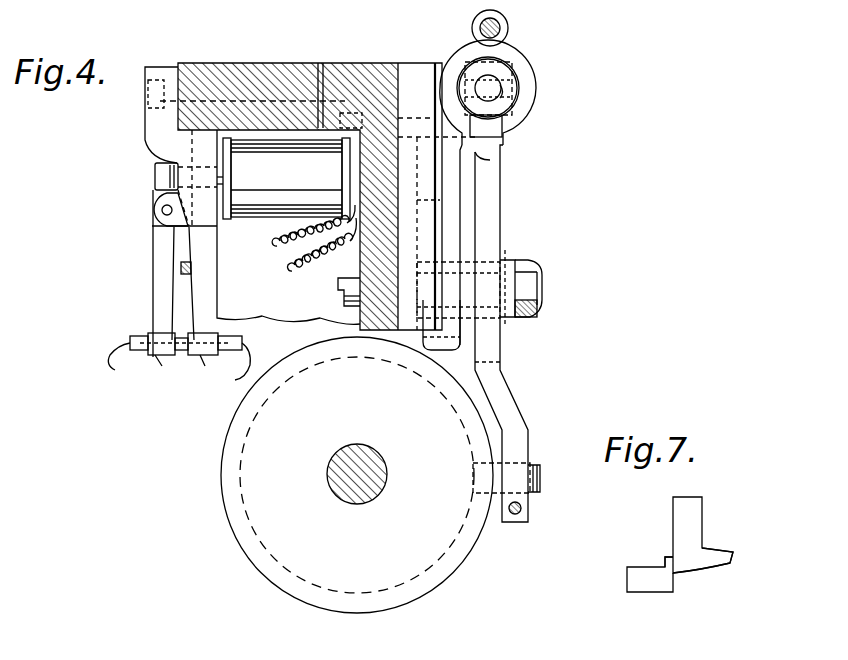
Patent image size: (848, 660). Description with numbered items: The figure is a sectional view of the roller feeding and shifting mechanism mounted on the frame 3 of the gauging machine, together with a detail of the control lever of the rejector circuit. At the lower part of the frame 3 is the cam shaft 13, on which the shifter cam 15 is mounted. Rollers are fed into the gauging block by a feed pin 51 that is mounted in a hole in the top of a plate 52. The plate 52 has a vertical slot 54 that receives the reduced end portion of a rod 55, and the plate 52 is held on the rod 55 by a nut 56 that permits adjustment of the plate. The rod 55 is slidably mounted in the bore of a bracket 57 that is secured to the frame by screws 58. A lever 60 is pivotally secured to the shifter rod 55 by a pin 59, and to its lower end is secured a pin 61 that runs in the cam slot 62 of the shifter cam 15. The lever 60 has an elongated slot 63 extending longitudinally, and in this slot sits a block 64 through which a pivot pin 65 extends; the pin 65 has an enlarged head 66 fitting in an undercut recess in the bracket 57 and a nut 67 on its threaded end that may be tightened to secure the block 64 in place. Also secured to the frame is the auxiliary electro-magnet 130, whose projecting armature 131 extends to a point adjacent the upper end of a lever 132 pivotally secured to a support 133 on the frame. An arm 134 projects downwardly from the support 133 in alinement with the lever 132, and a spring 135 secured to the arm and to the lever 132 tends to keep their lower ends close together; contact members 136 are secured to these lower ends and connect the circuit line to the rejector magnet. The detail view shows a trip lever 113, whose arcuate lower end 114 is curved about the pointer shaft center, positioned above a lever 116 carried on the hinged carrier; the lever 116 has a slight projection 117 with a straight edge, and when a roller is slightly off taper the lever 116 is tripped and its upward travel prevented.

In FIG. 4, the frame 3 is at (272, 62).
In FIG. 4, the cam shaft 13 is at (380, 485).
In FIG. 4, the shifter cam 15 is at (357, 475).
In FIG. 4, the feed pin 51 is at (501, 27).
In FIG. 4, the plate 52 is at (466, 62).
In FIG. 4, the vertical slot 54 is at (505, 122).
In FIG. 4, the rod 55 is at (493, 80).
In FIG. 4, the nut 56 is at (517, 102).
In FIG. 4, the bracket 57 is at (417, 200).
In FIG. 4, the screws 58 is at (318, 63).
In FIG. 4, the pin 59 is at (508, 92).
In FIG. 4, the lever 60 is at (488, 229).
In FIG. 4, the pin 61 is at (498, 500).
In FIG. 4, the cam slot 62 is at (440, 580).
In FIG. 4, the elongated slot 63 is at (490, 160).
In FIG. 4, the block 64 is at (445, 350).
In FIG. 4, the pivot pin 65 is at (544, 300).
In FIG. 4, the enlarged head 66 is at (505, 262).
In FIG. 4, the nut 67 is at (540, 313).
In FIG. 4, the electro-magnet 130 is at (263, 194).
In FIG. 4, the armature 131 is at (165, 160).
In FIG. 4, the lever 132 is at (163, 286).
In FIG. 4, the support 133 is at (150, 212).
In FIG. 4, the arm 134 is at (210, 306).
In FIG. 4, the spring 135 is at (181, 268).
In FIG. 4, the contact members 136 is at (203, 350).
In FIG. 7, the trip levers 113 is at (690, 532).
In FIG. 7, the lower ends 114 is at (710, 565).
In FIG. 7, the levers 116 is at (640, 582).
In FIG. 7, the projection 117 is at (664, 562).